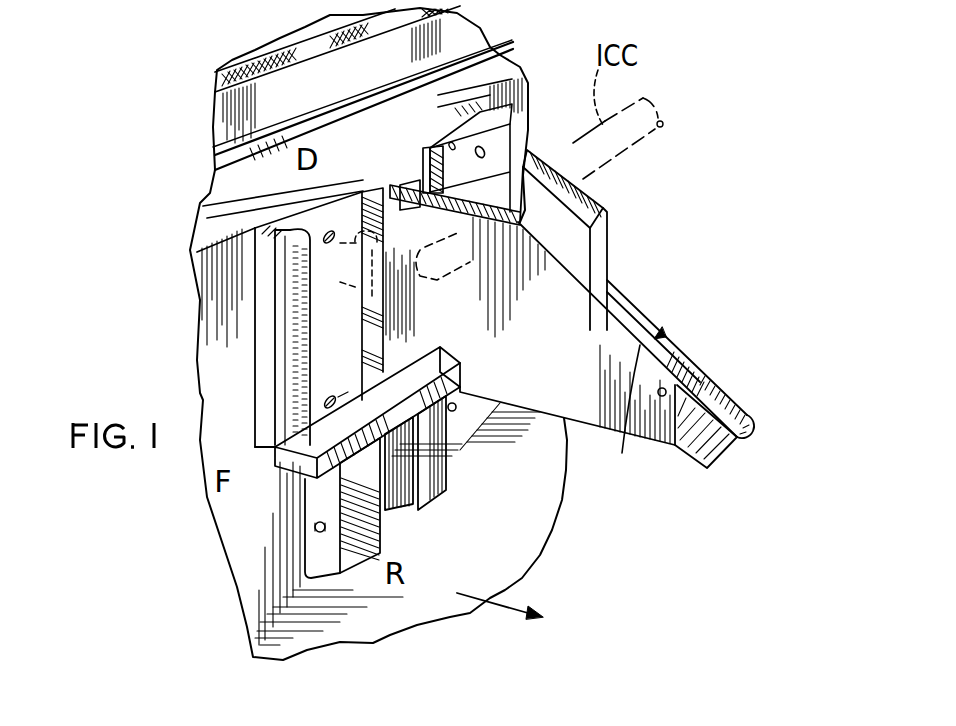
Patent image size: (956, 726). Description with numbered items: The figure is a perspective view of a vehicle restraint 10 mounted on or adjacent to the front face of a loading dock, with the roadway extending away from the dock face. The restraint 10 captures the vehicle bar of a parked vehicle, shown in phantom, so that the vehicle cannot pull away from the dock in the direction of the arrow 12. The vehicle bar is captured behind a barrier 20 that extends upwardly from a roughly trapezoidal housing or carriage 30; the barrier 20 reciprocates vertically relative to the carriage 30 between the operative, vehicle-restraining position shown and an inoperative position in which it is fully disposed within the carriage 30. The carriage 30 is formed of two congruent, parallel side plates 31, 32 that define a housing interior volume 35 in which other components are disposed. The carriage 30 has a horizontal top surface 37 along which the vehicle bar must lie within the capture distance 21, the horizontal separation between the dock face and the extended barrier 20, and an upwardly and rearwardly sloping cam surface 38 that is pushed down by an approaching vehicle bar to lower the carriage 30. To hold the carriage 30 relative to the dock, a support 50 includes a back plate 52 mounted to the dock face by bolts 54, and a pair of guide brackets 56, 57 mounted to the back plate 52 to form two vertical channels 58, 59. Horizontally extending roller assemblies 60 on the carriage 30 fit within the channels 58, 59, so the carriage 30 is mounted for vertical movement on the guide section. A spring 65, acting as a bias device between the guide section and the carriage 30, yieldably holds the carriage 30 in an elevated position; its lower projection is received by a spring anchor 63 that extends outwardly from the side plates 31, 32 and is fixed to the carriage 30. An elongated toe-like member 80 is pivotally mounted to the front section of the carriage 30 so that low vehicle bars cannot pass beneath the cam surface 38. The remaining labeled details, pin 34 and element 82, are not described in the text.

The vehicle restraint 10 is at (690, 157).
The arrow 12 is at (493, 607).
The barrier 20 is at (602, 243).
The capture distance 21 is at (488, 150).
The carriage 30 is at (603, 413).
The side plate 31 is at (648, 385).
The side plate 32 is at (668, 362).
The pin 34 is at (660, 396).
The housing interior volume 35 is at (660, 333).
The horizontal top surface 37 is at (502, 227).
The cam surface 38 is at (621, 413).
The support 50 is at (240, 283).
The back plate 52 is at (305, 510).
The bolts 54 is at (318, 530).
The guide bracket 56 is at (373, 205).
The guide bracket 57 is at (415, 157).
The channel 58 is at (371, 180).
The channel 59 is at (412, 158).
The roller assemblies 60 is at (355, 290).
The spring anchor 63 is at (302, 440).
The spring 65 is at (280, 348).
The toe-like member 80 is at (703, 470).
The roller tube 82 is at (720, 382).